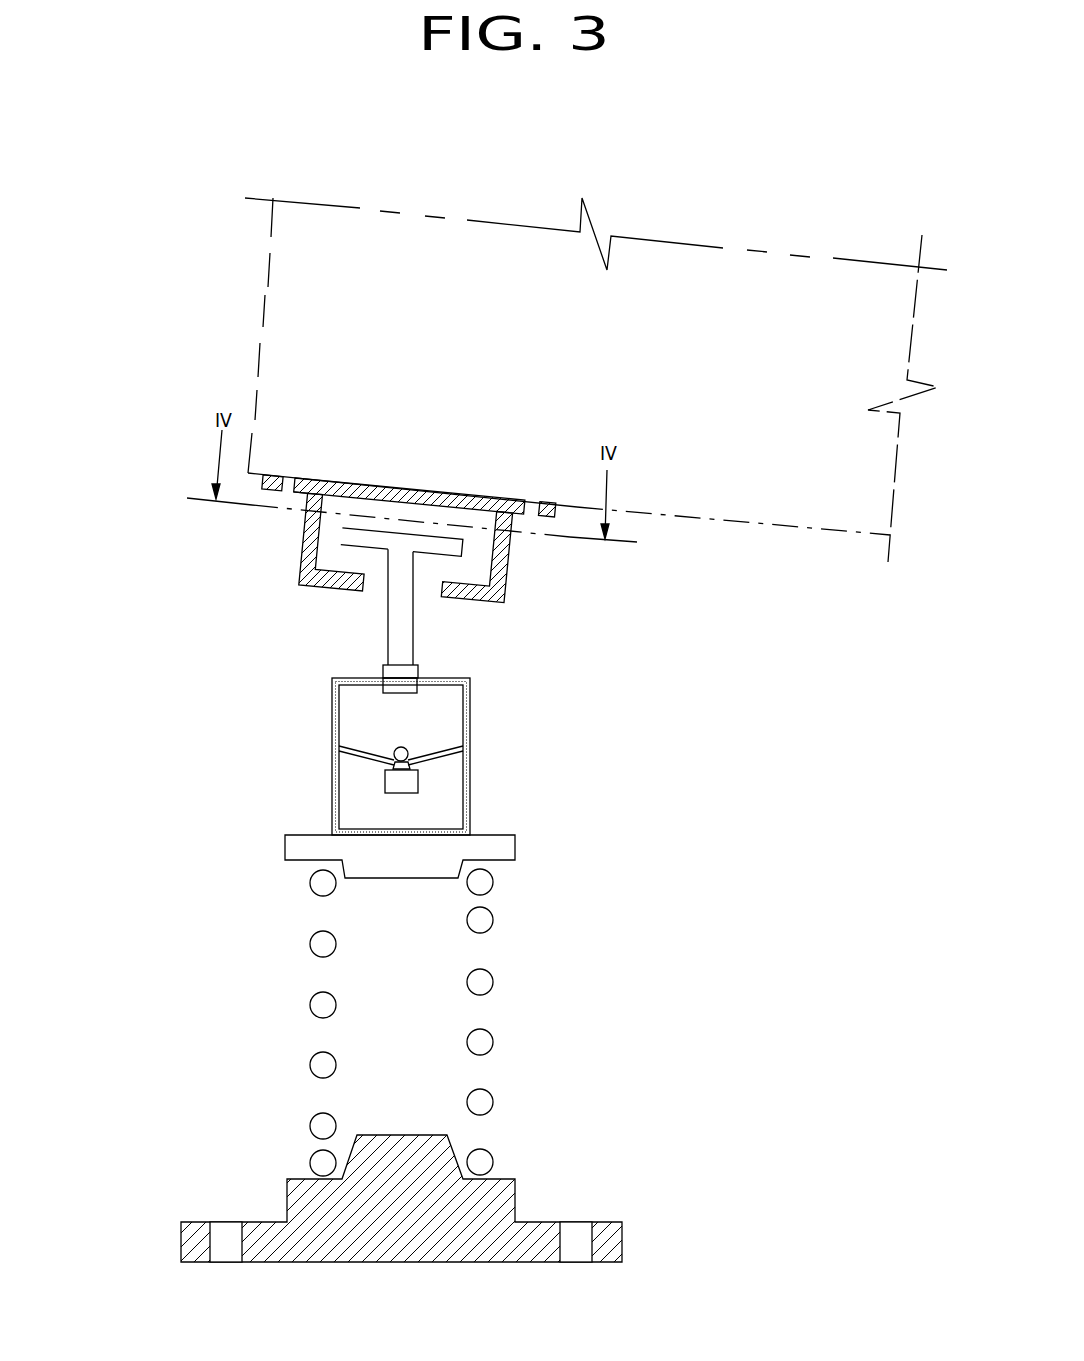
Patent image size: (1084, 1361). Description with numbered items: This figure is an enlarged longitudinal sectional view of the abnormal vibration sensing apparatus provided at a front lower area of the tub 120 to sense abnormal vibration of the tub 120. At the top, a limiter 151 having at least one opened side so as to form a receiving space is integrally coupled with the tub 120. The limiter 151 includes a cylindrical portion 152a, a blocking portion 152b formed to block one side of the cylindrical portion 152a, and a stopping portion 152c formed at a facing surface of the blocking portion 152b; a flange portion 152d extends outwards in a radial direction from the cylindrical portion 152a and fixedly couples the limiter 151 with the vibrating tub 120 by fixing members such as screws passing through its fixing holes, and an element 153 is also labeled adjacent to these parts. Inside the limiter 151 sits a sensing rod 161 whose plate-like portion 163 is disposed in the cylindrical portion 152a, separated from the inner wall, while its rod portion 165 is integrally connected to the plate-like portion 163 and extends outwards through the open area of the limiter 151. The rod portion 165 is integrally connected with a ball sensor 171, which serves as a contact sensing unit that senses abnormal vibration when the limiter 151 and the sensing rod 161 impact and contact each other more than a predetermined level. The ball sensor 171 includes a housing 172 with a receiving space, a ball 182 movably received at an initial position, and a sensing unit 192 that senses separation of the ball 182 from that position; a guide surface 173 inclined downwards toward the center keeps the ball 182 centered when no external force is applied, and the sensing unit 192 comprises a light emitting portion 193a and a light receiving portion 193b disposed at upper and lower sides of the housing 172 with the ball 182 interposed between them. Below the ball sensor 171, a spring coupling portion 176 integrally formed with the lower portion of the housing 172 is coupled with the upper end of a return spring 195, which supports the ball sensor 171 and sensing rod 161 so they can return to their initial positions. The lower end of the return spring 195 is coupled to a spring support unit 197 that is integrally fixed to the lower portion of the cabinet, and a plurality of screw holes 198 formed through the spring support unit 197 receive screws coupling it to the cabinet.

The tub 120 is at (838, 533).
The limiter 151 is at (304, 516).
The cylindrical portion 152a is at (300, 546).
The blocking portion 152b is at (352, 480).
The stopping portion 152c is at (317, 577).
The flange portion 152d is at (270, 484).
The pad 153 is at (298, 504).
The sensing rod 161 is at (490, 603).
The plate-like portion 163 is at (460, 557).
The rod portion 165 is at (413, 623).
The ball sensor 171 is at (414, 756).
The housing 172 is at (472, 693).
The guide surface 173 is at (376, 756).
The spring coupling portion 176 is at (498, 848).
The ball 182 is at (404, 755).
The sensing unit 192 is at (514, 746).
The light emitting portion 193a is at (405, 693).
The light receiving portion 193b is at (404, 782).
The return spring 195 is at (477, 920).
The spring support unit 197 is at (437, 1212).
The screw holes 198 is at (583, 1247).